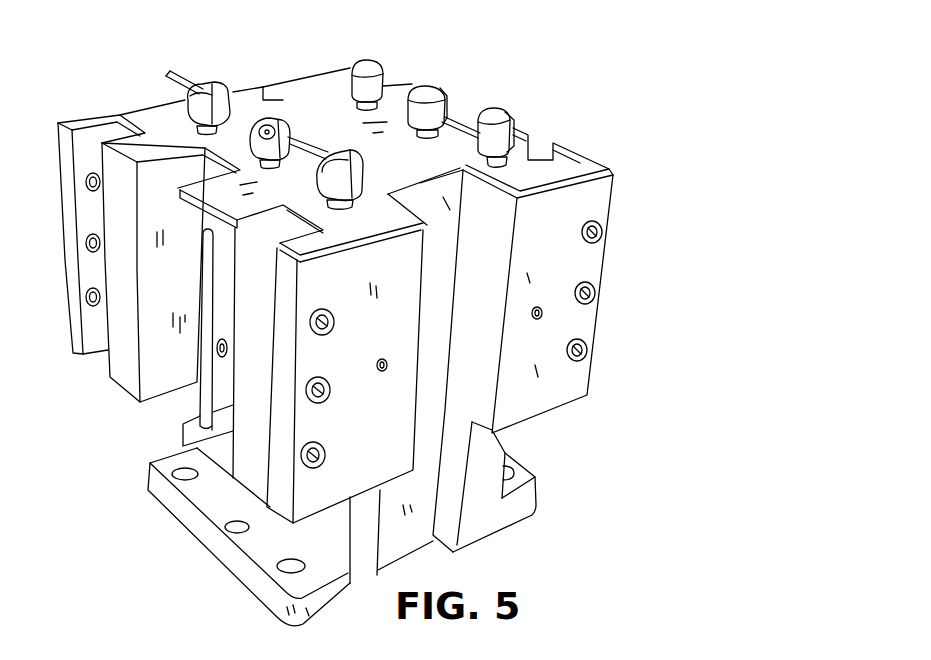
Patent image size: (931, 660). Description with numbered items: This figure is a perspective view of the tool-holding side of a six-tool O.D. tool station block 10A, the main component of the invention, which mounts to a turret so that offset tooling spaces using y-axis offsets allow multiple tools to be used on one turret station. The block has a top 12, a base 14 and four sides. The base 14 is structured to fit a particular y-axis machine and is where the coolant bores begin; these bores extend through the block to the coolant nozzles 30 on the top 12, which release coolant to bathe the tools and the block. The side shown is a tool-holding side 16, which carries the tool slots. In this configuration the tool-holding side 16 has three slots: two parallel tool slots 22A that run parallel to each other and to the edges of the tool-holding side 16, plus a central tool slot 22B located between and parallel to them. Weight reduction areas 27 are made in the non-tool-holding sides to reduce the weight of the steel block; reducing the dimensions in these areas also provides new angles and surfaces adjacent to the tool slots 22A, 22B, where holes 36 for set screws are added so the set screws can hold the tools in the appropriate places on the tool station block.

The O.D. tool station block 10A is at (293, 53).
The top 12 is at (460, 138).
The coolant nozzle 30 is at (507, 125).
The weight reduction area 27 is at (488, 233).
The holes for set screws 36 is at (583, 351).
The base 14 is at (540, 497).
The tool-holding side 16 is at (66, 330).
The tool slots 22A is at (100, 360).
The central tool slot 22B is at (167, 412).